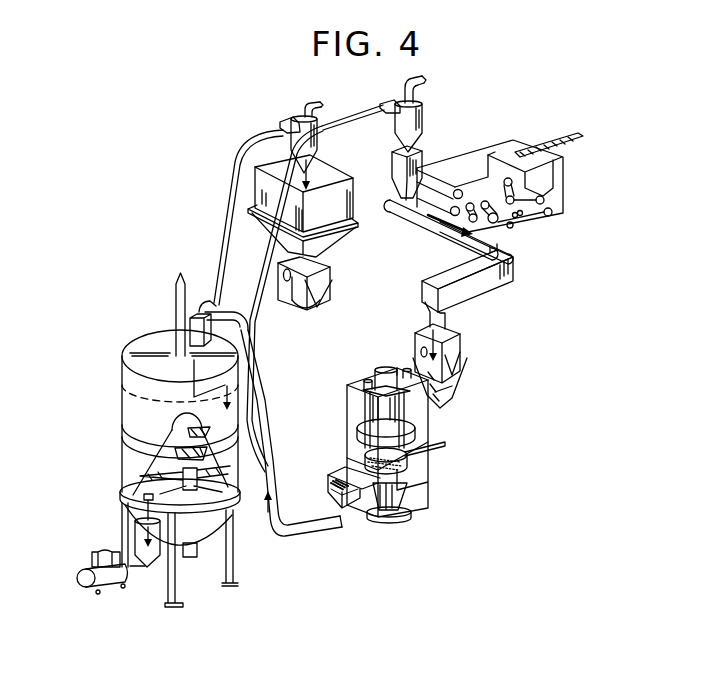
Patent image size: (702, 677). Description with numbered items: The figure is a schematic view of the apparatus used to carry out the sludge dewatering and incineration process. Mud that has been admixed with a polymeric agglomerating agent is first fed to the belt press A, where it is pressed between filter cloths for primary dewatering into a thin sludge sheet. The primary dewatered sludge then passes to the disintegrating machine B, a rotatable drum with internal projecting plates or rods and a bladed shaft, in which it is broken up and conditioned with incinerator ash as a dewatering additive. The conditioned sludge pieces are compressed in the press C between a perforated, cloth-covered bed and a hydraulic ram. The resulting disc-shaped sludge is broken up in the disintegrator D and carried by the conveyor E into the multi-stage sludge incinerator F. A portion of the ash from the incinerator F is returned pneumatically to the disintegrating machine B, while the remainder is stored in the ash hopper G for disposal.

The belt press A is at (478, 143).
The disintegrating machine B is at (491, 300).
The press C is at (430, 489).
The disintegrator D is at (316, 480).
The conveyor E is at (268, 541).
The multi-stage sludge incinerator F is at (156, 330).
The ash hopper G is at (330, 244).